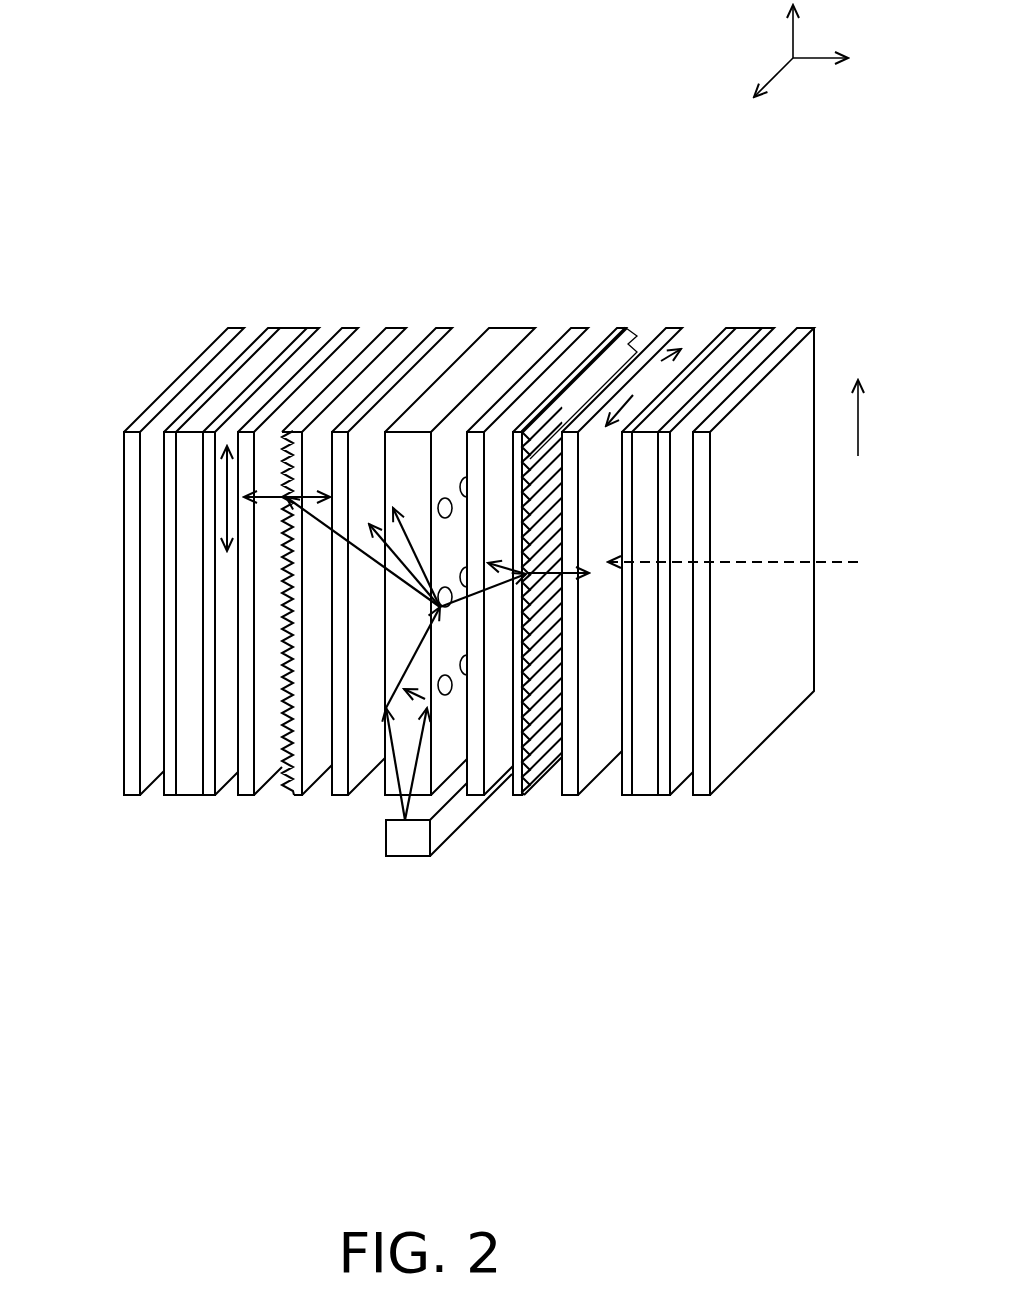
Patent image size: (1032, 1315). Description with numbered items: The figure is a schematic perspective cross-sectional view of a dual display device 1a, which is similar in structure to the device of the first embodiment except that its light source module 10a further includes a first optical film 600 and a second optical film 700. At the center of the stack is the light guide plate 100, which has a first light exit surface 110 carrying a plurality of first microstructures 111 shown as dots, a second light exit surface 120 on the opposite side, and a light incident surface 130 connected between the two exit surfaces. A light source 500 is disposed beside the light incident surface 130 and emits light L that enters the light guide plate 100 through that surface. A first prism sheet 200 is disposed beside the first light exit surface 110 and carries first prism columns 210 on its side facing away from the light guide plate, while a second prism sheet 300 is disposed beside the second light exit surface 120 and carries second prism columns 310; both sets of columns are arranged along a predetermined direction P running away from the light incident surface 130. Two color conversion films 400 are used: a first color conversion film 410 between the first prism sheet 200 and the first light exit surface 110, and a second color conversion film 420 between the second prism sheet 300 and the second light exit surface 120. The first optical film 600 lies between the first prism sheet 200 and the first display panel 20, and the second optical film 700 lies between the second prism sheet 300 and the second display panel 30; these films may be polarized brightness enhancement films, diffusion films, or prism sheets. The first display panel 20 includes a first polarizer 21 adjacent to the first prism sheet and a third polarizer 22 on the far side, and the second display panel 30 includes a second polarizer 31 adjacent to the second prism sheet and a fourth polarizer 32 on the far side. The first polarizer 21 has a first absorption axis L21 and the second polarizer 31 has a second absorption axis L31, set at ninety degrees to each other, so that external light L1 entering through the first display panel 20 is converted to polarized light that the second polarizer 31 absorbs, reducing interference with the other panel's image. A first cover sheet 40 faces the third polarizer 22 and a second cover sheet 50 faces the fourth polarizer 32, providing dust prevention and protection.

The dual display device 1a is at (146, 120).
The light source module 10a is at (153, 957).
The first display panel 20 is at (706, 510).
The first polarizer 21 is at (723, 332).
The third polarizer 22 is at (767, 333).
The second display panel 30 is at (249, 512).
The second polarizer 31 is at (310, 330).
The fourth polarizer 32 is at (268, 328).
The first cover sheet 40 is at (803, 330).
The second cover sheet 50 is at (233, 327).
The light guide plate 100 is at (457, 597).
The first light exit surface 110 is at (530, 348).
The first microstructures 111 is at (447, 504).
The second light exit surface 120 is at (470, 343).
The light incident surface 130 is at (395, 797).
The first prism sheet 200 is at (613, 616).
The first prism columns 210 is at (633, 337).
The second prism sheet 300 is at (313, 616).
The second prism columns 310 is at (290, 432).
The color conversion film 400 is at (466, 647).
The first color conversion film 410 is at (477, 787).
The second color conversion film 420 is at (337, 787).
The light source 500 is at (410, 847).
The first optical film 600 is at (568, 788).
The second optical film 700 is at (245, 785).
The light L is at (382, 773).
The external light L1 is at (848, 563).
The first absorption axis L21 is at (653, 372).
The second absorption axis L31 is at (227, 500).
The predetermined direction P is at (872, 418).